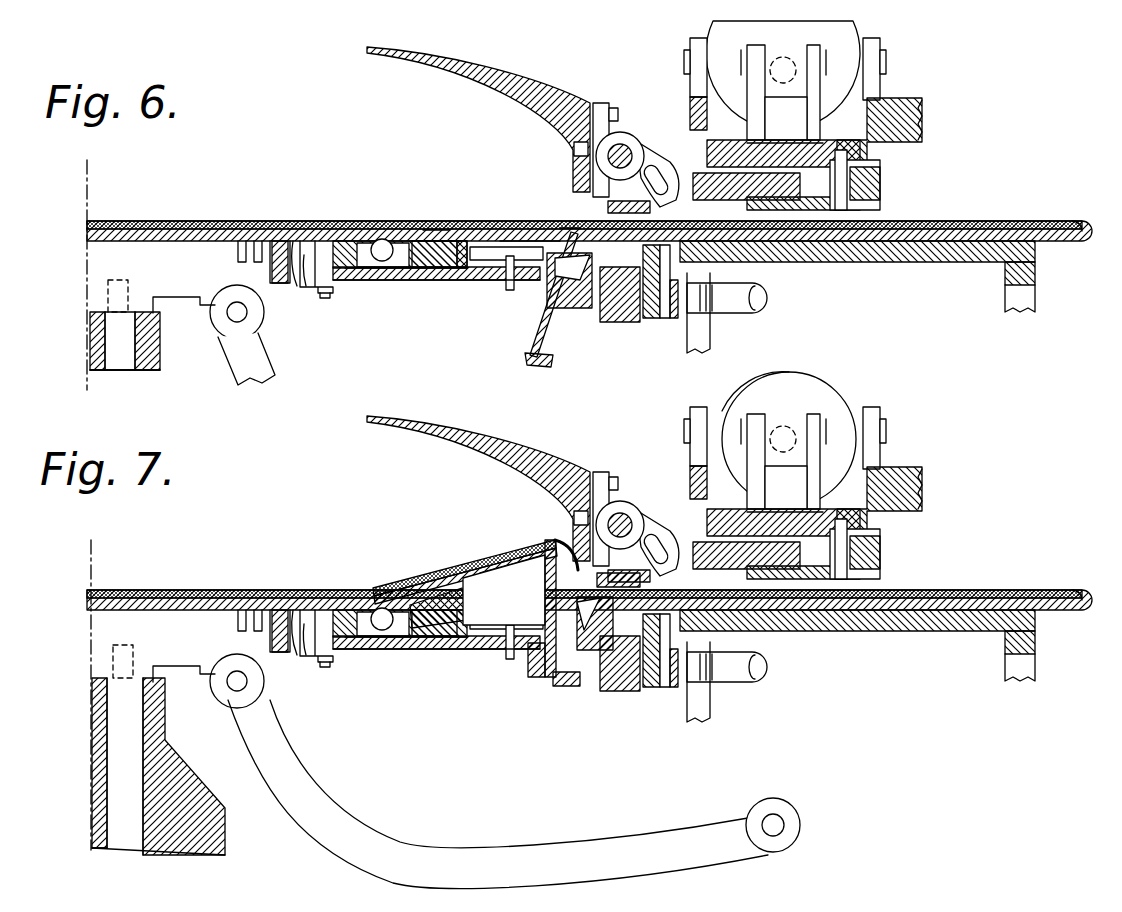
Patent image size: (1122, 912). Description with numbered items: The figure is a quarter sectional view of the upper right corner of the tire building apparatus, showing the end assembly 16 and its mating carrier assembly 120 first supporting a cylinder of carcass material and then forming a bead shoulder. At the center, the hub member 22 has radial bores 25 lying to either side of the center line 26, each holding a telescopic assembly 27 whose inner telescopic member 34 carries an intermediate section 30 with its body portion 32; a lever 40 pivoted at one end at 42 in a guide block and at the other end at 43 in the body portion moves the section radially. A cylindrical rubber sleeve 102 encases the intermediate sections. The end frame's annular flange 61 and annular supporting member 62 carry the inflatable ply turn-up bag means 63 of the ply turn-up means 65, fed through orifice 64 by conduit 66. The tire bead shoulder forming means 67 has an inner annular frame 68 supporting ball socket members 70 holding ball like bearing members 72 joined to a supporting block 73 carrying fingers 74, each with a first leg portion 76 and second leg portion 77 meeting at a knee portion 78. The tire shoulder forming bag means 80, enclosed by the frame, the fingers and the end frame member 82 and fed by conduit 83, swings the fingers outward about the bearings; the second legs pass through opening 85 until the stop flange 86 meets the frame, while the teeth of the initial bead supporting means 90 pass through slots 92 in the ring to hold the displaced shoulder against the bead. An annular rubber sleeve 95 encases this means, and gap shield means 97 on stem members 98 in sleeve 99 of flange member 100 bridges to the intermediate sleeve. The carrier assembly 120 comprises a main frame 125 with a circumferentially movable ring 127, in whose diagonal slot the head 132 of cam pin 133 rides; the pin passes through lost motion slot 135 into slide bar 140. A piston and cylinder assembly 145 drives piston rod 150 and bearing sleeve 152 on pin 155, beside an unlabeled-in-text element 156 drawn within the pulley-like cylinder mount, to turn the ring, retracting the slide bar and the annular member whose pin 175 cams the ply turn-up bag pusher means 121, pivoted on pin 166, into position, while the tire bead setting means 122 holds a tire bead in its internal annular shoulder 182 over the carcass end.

In FIG. 6, the end assembly 16 is at (985, 206).
In FIG. 7, the end assembly 16 is at (999, 557).
In FIG. 6, the hub member 22 is at (157, 352).
In FIG. 7, the hub member 22 is at (215, 840).
In FIG. 6, the radially extending bore 25 is at (130, 368).
In FIG. 7, the radially extending bore 25 is at (115, 805).
In FIG. 6, the center line 26 is at (87, 190).
In FIG. 7, the center line 26 is at (58, 695).
In FIG. 6, the telescopic assembly 27 is at (118, 333).
In FIG. 7, the telescopic assembly 27 is at (122, 738).
In FIG. 6, the intermediate section 30 is at (125, 260).
In FIG. 7, the intermediate section 30 is at (589, 585).
In FIG. 6, the body portion 32 is at (95, 256).
In FIG. 7, the body portion 32 is at (161, 631).
In FIG. 6, the inner telescopic member 34 is at (108, 294).
In FIG. 7, the inner telescopic member 34 is at (113, 660).
In FIG. 6, the lever 40 is at (264, 366).
In FIG. 7, the lever 40 is at (560, 850).
In FIG. 7, the pivot 42 is at (792, 822).
In FIG. 6, the pivot 43 is at (247, 315).
In FIG. 7, the pivot 43 is at (262, 681).
In FIG. 6, the annular flange 61 is at (912, 258).
In FIG. 7, the annular flange 61 is at (857, 645).
In FIG. 6, the annular supporting member 62 is at (608, 322).
In FIG. 7, the annular supporting member 62 is at (619, 682).
In FIG. 6, the inflatable ply turn-up bag means 63 is at (1035, 222).
In FIG. 7, the inflatable ply turn-up bag means 63 is at (1057, 576).
In FIG. 6, the orifice 64 is at (648, 318).
In FIG. 7, the orifice 64 is at (632, 650).
In FIG. 6, the ply turn-up means 65 is at (538, 137).
In FIG. 7, the ply turn-up means 65 is at (500, 492).
In FIG. 6, the conduit 66 is at (745, 306).
In FIG. 7, the conduit 66 is at (735, 684).
In FIG. 6, the tire bead shoulder forming means 67 is at (483, 202).
In FIG. 7, the tire bead shoulder forming means 67 is at (458, 551).
In FIG. 6, the inner annular frame 68 is at (432, 281).
In FIG. 7, the inner annular frame 68 is at (436, 669).
In FIG. 6, the ball socket member 70 is at (340, 248).
In FIG. 7, the ball socket member 70 is at (400, 599).
In FIG. 6, the ball like bearing member 72 is at (385, 240).
In FIG. 7, the ball like bearing member 72 is at (376, 583).
In FIG. 6, the supporting block 73 is at (400, 281).
In FIG. 7, the supporting block 73 is at (406, 661).
In FIG. 6, the tire bead shoulder forming finger 74 is at (450, 240).
In FIG. 7, the tire bead shoulder forming finger 74 is at (422, 590).
In FIG. 6, the first leg portion 76 is at (525, 240).
In FIG. 7, the first leg portion 76 is at (500, 566).
In FIG. 6, the second leg portion 77 is at (530, 330).
In FIG. 7, the second leg portion 77 is at (540, 655).
In FIG. 6, the knee portion 78 is at (568, 228).
In FIG. 7, the knee portion 78 is at (556, 541).
In FIG. 6, the tire shoulder forming bag means 80 is at (500, 284).
In FIG. 7, the tire shoulder forming bag means 80 is at (493, 665).
In FIG. 6, the end frame member 82 is at (450, 281).
In FIG. 7, the end frame member 82 is at (434, 653).
In FIG. 6, the conduit 83 is at (509, 292).
In FIG. 7, the conduit 83 is at (498, 653).
In FIG. 6, the opening 85 is at (551, 282).
In FIG. 7, the opening 85 is at (560, 665).
In FIG. 6, the stop flange 86 is at (538, 367).
In FIG. 7, the stop flange 86 is at (567, 687).
In FIG. 6, the first or initial bead supporting means 90 is at (583, 270).
In FIG. 7, the first or initial bead supporting means 90 is at (545, 604).
In FIG. 7, the radially inwardly extending slot 92 is at (583, 624).
In FIG. 6, the annular rubber sleeve 95 is at (427, 218).
In FIG. 7, the annular rubber sleeve 95 is at (475, 564).
In FIG. 6, the gap shield means 97 is at (294, 277).
In FIG. 7, the gap shield means 97 is at (298, 642).
In FIG. 6, the stem member 98 is at (323, 296).
In FIG. 7, the stem member 98 is at (328, 606).
In FIG. 6, the sleeve 99 is at (323, 237).
In FIG. 7, the sleeve 99 is at (304, 604).
In FIG. 6, the flange member 100 is at (372, 293).
In FIG. 7, the flange member 100 is at (436, 678).
In FIG. 6, the cylindrical rubber sleeve 102 is at (200, 220).
In FIG. 7, the cylindrical rubber sleeve 102 is at (584, 571).
In FIG. 6, the carrier assembly 120 is at (936, 82).
In FIG. 7, the carrier assembly 120 is at (972, 424).
In FIG. 6, the ply turn-up bag pusher means 121 is at (537, 83).
In FIG. 7, the ply turn-up bag pusher means 121 is at (478, 486).
In FIG. 6, the tire bead setting means 122 is at (893, 204).
In FIG. 7, the tire bead setting means 122 is at (856, 576).
In FIG. 6, the main frame 125 is at (926, 113).
In FIG. 7, the main frame 125 is at (957, 488).
In FIG. 6, the ring 127 is at (902, 106).
In FIG. 7, the ring 127 is at (888, 480).
In FIG. 6, the head of cam pin 132 is at (890, 158).
In FIG. 7, the head of cam pin 132 is at (834, 526).
In FIG. 6, the cam pin 133 is at (882, 183).
In FIG. 7, the cam pin 133 is at (821, 555).
In FIG. 6, the lost motion slot 135 is at (821, 212).
In FIG. 7, the lost motion slot 135 is at (848, 597).
In FIG. 6, the slide bar 140 is at (870, 213).
In FIG. 7, the slide bar 140 is at (875, 614).
In FIG. 6, the piston and cylinder assembly 145 is at (855, 26).
In FIG. 7, the piston and cylinder assembly 145 is at (812, 433).
In FIG. 6, the piston rod 150 is at (783, 57).
In FIG. 7, the piston rod 150 is at (848, 418).
In FIG. 7, the bearing sleeve 152 is at (757, 381).
In FIG. 6, the pin 155 is at (745, 69).
In FIG. 7, the pin 155 is at (761, 453).
In FIG. 6, the bearing block 156 is at (783, 94).
In FIG. 6, the pin 166 is at (626, 148).
In FIG. 7, the pin 166 is at (635, 511).
In FIG. 6, the pin 175 is at (670, 164).
In FIG. 7, the pin 175 is at (643, 528).
In FIG. 7, the internal annular shoulder 182 is at (598, 563).